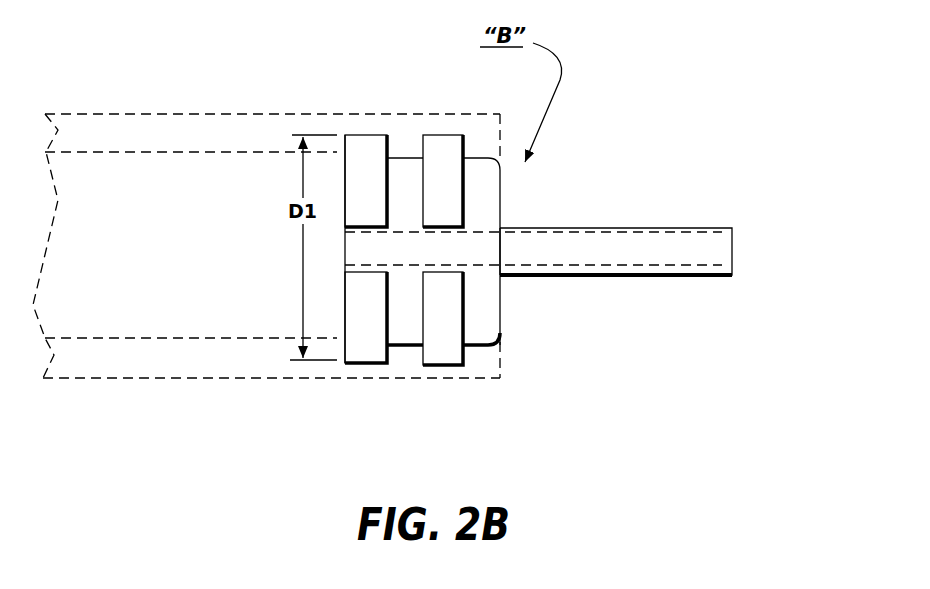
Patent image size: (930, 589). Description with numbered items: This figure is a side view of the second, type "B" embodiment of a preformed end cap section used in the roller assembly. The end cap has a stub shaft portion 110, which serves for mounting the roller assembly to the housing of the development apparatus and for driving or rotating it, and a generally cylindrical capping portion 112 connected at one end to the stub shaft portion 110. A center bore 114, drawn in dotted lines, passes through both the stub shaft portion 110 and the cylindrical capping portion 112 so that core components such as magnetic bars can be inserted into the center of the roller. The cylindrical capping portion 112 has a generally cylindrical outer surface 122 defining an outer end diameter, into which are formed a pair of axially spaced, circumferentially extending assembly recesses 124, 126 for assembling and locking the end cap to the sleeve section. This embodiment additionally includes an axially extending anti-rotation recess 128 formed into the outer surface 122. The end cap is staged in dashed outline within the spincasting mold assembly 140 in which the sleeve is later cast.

The stub shaft portion 110 is at (690, 228).
The cylindrical capping portion 112 is at (526, 201).
The center bore 114 is at (693, 268).
The outer surface 122 is at (362, 367).
The assembly recess 124 is at (403, 158).
The assembly recess 126 is at (463, 347).
The anti-rotation recess 128 is at (360, 253).
The spincasting mold assembly 140 is at (113, 130).